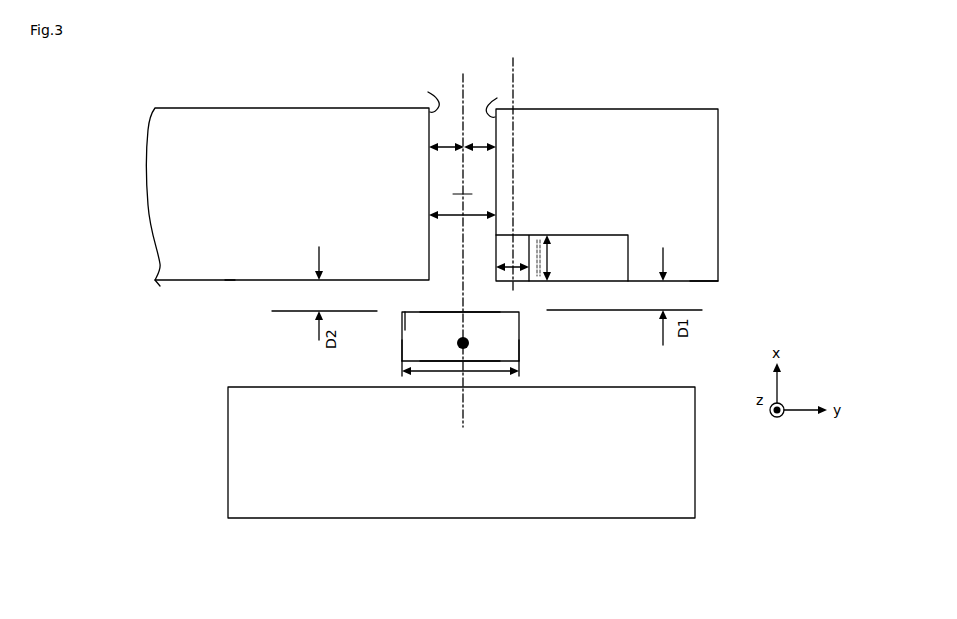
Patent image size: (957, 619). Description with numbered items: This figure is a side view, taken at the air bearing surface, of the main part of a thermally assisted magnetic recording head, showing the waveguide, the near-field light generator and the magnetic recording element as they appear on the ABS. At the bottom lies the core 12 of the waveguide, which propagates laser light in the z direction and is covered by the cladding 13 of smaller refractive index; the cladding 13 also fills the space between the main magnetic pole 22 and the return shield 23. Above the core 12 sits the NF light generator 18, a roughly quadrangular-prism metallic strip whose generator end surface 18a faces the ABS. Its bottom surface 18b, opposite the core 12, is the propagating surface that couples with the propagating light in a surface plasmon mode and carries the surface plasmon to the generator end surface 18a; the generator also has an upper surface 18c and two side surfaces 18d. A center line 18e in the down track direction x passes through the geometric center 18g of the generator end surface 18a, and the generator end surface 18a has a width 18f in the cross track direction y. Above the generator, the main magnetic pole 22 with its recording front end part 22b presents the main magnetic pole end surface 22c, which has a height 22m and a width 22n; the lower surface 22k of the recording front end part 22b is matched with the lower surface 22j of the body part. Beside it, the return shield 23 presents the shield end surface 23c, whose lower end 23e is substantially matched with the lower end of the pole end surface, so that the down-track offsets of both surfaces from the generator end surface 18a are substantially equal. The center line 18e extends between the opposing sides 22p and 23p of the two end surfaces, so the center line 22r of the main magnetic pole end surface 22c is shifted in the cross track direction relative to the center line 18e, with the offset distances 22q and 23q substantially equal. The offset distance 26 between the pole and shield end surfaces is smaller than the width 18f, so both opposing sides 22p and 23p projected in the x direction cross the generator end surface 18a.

The core 12 is at (687, 452).
The cladding 13 is at (462, 187).
The NF light generator 18 is at (510, 320).
The generator end surface 18a is at (430, 321).
The bottom surface (propagating surface) 18b is at (455, 362).
The upper surface 18c is at (455, 312).
The side surfaces 18d is at (402, 350).
The center line 18e is at (465, 243).
The width 18f is at (460, 373).
The center of figure 18g is at (460, 340).
The main magnetic pole 22 is at (657, 135).
The recording front end part 22b is at (570, 253).
The main magnetic pole end surface 22c is at (517, 245).
The lower surface of main magnetic pole body part 22j is at (705, 282).
The lower surface of recording front end part 22k is at (520, 284).
The height 22m is at (558, 258).
The width 22n is at (512, 258).
The opposing side 22p is at (495, 96).
The offset distance 22q is at (480, 137).
The center line 22r is at (515, 165).
The return shield 23 is at (193, 137).
The shield end surface 23c is at (172, 274).
The lower end of shield end surface 23e is at (238, 282).
The opposing side 23p is at (418, 97).
The offset distance 23q is at (446, 137).
The offset distance 26 is at (462, 208).